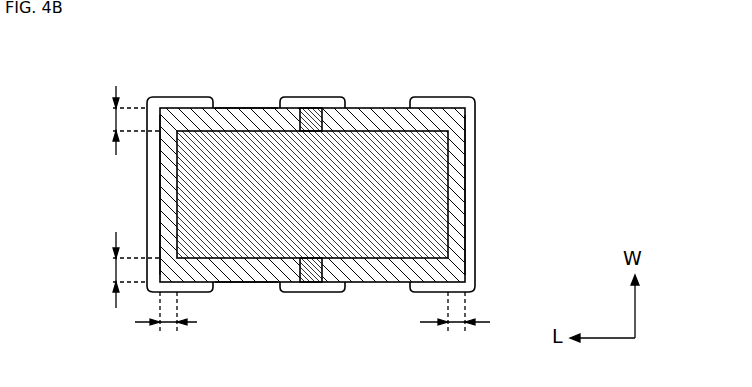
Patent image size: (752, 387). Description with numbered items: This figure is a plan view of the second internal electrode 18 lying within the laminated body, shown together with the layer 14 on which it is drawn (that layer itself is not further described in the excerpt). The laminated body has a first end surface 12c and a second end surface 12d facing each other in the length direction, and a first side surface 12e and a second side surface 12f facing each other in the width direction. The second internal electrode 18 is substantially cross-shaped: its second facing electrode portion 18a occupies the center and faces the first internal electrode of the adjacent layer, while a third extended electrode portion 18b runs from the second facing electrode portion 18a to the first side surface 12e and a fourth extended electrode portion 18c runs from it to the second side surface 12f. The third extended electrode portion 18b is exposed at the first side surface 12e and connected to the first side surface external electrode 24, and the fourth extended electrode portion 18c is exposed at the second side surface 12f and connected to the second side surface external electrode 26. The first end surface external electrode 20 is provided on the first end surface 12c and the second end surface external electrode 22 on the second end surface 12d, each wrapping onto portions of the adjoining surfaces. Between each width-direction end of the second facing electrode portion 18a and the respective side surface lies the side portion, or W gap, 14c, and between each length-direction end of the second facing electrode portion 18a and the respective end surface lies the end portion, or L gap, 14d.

The first end surface 12c is at (156, 183).
The second end surface 12d is at (463, 183).
The first side surface 12e is at (222, 107).
The second side surface 12f is at (250, 284).
The ceramic body / dielectric layer 14 is at (385, 117).
The side portion (W gap) 14c is at (111, 197).
The end portion (L gap) 14d is at (312, 327).
The second internal electrode 18 is at (375, 260).
The second facing electrode portion 18a is at (415, 218).
The third extended electrode portion 18b is at (308, 115).
The fourth extended electrode portion 18c is at (303, 270).
The first end surface external electrode 20 is at (172, 102).
The second end surface external electrode 22 is at (445, 100).
The first side surface external electrode 24 is at (323, 99).
The second side surface external electrode 26 is at (318, 289).